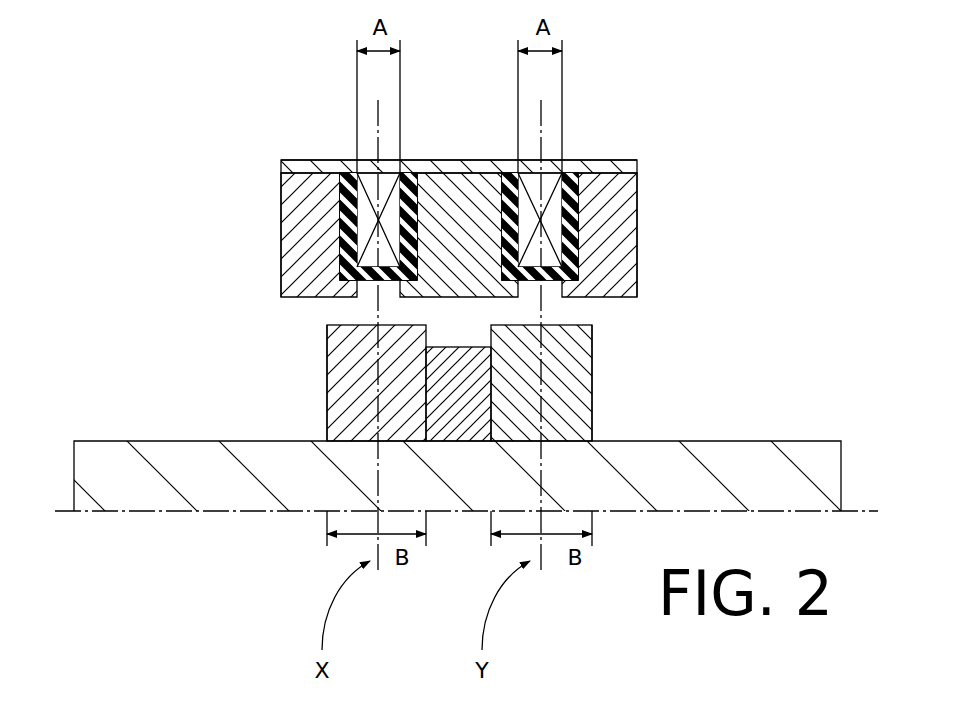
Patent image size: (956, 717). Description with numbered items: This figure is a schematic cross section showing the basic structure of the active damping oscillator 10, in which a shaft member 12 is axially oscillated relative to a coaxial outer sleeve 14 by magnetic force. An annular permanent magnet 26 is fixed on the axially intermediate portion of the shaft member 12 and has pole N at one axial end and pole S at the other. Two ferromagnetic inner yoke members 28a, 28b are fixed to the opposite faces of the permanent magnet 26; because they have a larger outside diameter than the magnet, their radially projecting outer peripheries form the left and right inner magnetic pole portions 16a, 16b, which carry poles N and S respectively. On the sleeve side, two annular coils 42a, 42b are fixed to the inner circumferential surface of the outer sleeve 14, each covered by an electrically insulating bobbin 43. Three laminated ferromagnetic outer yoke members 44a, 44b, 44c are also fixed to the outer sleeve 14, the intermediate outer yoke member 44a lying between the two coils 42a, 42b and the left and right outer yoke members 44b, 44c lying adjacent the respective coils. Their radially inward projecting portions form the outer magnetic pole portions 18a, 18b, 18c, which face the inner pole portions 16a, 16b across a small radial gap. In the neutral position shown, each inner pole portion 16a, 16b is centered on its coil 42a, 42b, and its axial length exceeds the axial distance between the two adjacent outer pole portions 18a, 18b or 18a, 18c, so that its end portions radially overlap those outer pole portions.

The active damping oscillator 10 is at (166, 238).
The shaft member 12 is at (162, 452).
The outer sleeve 14 is at (300, 167).
The left inner magnetic pole portion 16a is at (354, 327).
The right inner magnetic pole portion 16b is at (566, 327).
The intermediate outer magnetic pole portion 18a is at (462, 280).
The left outer magnetic pole portion 18b is at (320, 290).
The right outer magnetic pole portion 18c is at (613, 292).
The permanent magnet 26 is at (470, 427).
The left inner yoke member 28a is at (310, 398).
The right inner yoke member 28b is at (606, 408).
The left coil 42a is at (367, 185).
The right coil 42b is at (552, 183).
The electrically insulating bobbin 43 is at (347, 222).
The intermediate outer yoke member 44a is at (435, 158).
The left outer yoke member 44b is at (266, 192).
The right outer yoke member 44c is at (647, 236).